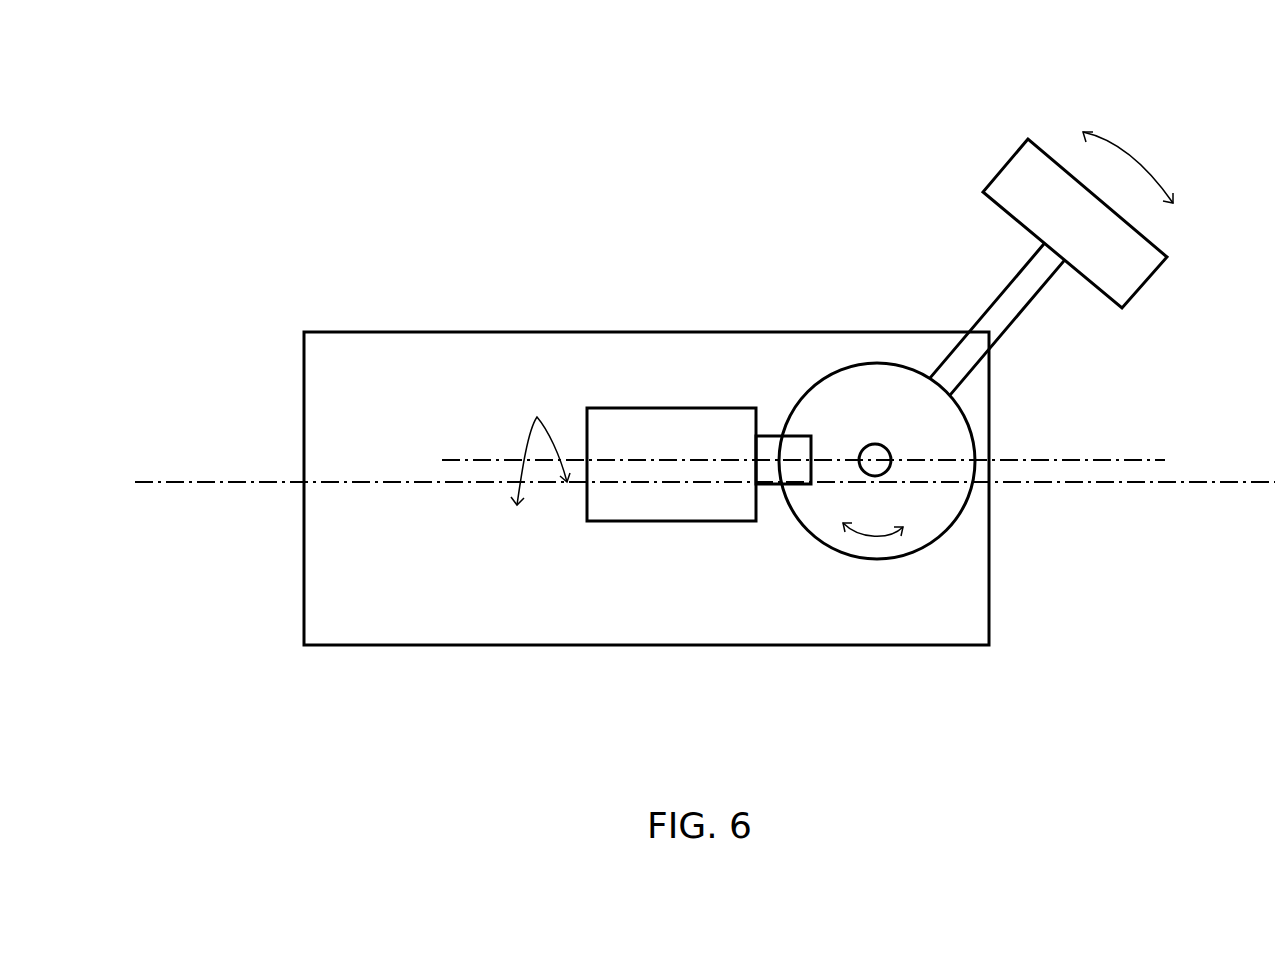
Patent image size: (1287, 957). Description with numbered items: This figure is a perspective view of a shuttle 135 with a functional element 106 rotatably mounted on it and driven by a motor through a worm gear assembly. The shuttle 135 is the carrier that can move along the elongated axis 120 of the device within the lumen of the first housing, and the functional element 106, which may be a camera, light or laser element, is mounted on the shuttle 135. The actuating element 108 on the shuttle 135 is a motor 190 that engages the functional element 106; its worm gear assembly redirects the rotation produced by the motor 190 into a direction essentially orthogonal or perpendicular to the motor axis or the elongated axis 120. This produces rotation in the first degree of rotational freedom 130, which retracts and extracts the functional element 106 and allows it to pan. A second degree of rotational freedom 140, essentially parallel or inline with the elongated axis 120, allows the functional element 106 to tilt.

The functional element 106 is at (1007, 165).
The actuating element 108 is at (638, 575).
The motor 190 is at (672, 521).
The elongated axis 120 is at (262, 482).
The first degree of rotational freedom 130 is at (1138, 160).
The shuttle 135 is at (647, 330).
The second degree of rotational freedom 140 is at (537, 417).